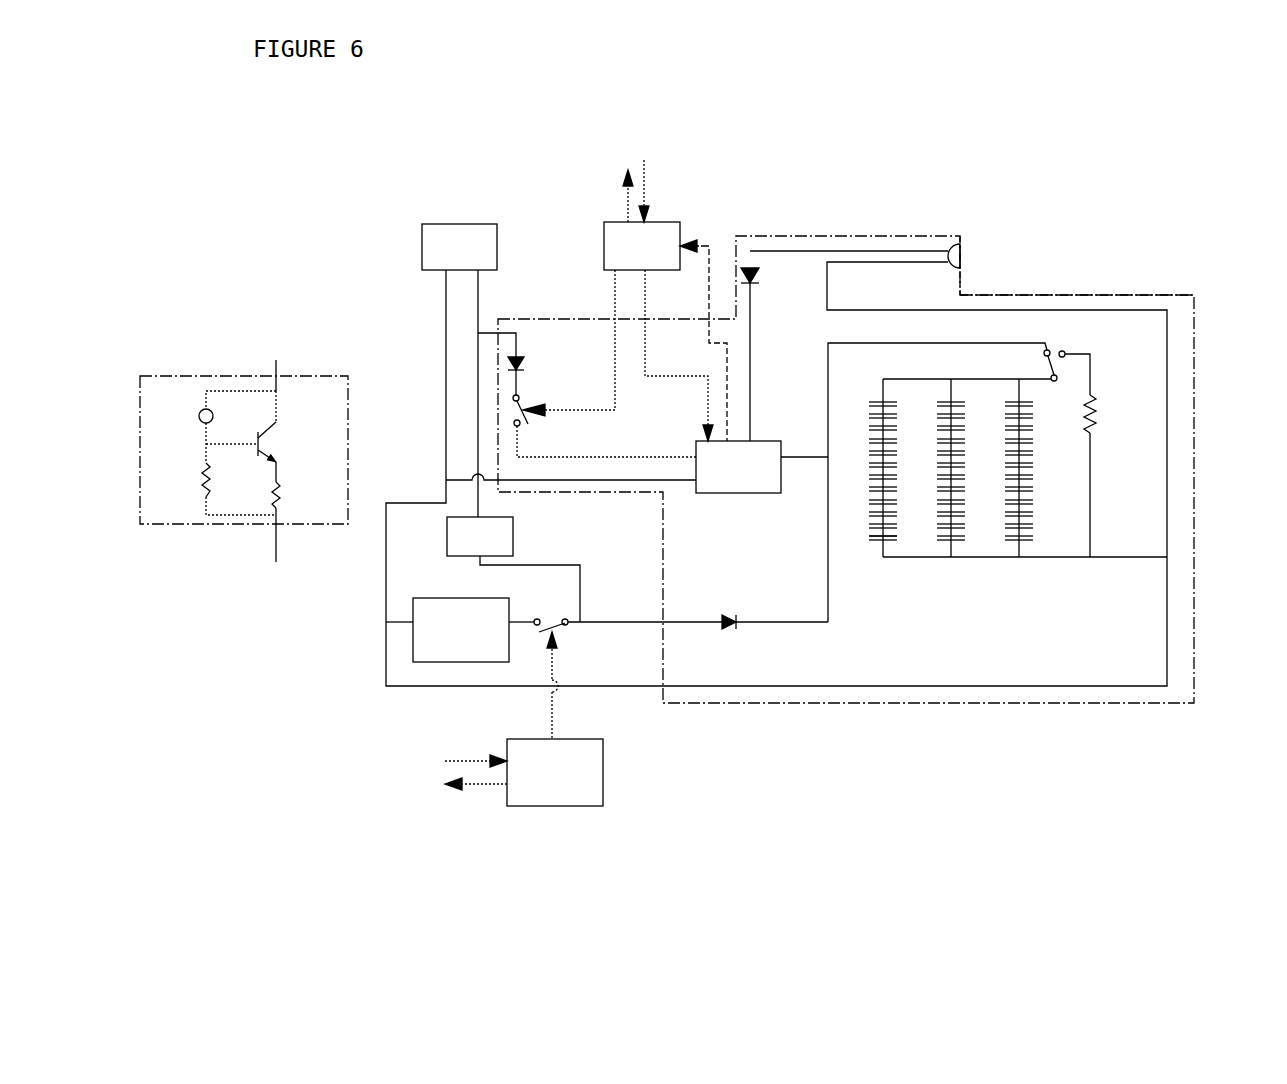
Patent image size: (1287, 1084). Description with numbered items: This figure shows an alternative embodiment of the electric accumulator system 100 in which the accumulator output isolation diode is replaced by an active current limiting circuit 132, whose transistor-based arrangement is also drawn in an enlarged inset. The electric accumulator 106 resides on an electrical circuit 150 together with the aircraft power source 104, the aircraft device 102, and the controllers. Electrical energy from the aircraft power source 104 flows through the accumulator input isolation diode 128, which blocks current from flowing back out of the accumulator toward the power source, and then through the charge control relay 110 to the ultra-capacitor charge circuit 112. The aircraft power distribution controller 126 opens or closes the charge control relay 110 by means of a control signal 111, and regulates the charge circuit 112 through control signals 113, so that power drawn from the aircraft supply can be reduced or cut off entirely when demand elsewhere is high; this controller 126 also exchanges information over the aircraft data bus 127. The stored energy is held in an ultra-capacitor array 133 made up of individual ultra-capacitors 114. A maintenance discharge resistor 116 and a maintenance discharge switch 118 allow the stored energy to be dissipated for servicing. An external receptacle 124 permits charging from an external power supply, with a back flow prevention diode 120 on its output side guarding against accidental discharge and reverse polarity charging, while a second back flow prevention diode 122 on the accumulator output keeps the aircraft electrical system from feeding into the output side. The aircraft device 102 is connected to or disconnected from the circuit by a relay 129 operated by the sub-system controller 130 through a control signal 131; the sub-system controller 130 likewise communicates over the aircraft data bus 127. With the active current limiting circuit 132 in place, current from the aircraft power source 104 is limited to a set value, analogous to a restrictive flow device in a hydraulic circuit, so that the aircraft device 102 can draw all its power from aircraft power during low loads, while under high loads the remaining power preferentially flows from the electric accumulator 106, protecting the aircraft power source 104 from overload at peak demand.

The power tool system 100 is at (273, 728).
The aircraft device 102 is at (436, 663).
The aircraft power source 104 is at (421, 253).
The electric accumulator 106 is at (1096, 295).
The charge control relay 110 is at (522, 410).
The control signal 111 is at (617, 341).
The ultra-capacitor charge circuit 112 is at (735, 495).
The control signals 113 is at (708, 325).
The ultra-capacitor 114 is at (876, 548).
The maintenance discharge resistor 116 is at (1096, 428).
The maintenance discharge switch 118 is at (1058, 370).
The back flow prevention diode 120 is at (752, 266).
The back flow prevention diode 122 is at (732, 612).
The external receptacle 124 is at (962, 243).
The aircraft power distribution controller 126 is at (603, 228).
The aircraft data bus 127 is at (650, 180).
The accumulator input isolation diode 128 is at (519, 356).
The relay 129 is at (566, 627).
The sub-system controller 130 is at (606, 781).
The control signal 131 is at (553, 708).
The active current limiting circuit 132 is at (229, 525).
The ultra-capacitor array 133 is at (966, 565).
The electrical circuit 150 is at (721, 689).